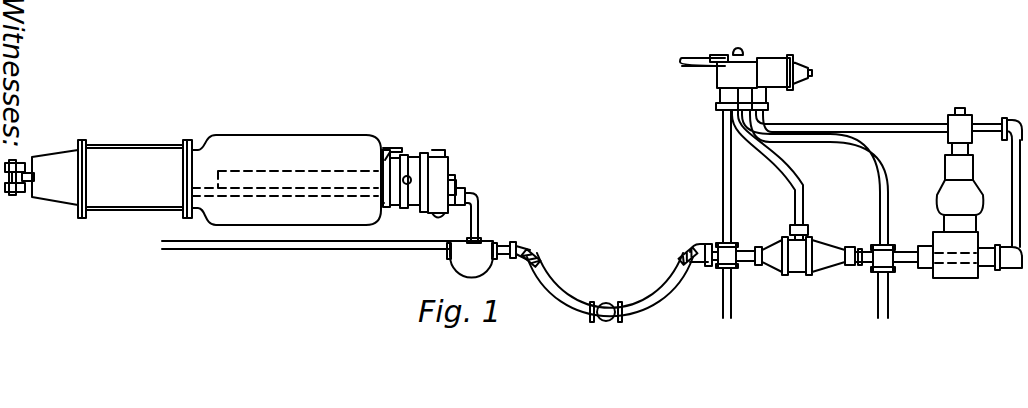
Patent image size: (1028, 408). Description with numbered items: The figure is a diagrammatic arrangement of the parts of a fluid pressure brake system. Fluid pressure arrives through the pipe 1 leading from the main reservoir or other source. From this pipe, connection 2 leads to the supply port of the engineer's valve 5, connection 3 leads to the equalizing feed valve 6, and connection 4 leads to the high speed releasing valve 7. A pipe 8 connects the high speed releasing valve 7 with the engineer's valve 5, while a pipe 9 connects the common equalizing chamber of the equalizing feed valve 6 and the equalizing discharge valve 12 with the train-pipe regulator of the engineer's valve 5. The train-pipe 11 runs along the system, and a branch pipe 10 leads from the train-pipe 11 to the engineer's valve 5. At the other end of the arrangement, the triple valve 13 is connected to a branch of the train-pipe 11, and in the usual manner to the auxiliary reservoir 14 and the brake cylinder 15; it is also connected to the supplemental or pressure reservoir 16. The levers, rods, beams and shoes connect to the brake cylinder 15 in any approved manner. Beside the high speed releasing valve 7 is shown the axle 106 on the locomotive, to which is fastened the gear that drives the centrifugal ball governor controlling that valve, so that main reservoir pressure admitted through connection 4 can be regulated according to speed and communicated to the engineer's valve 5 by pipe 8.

The pipe 1 is at (888, 297).
The connection 2 is at (815, 177).
The connection 3 is at (870, 264).
The connection pipe 4 is at (1010, 157).
The engineer's valve 5 is at (764, 63).
The equalizing feed valve 6 is at (838, 268).
The high speed releasing valve 7 is at (952, 118).
The pipe 8 is at (852, 121).
The pipe 9 is at (794, 168).
The branch pipe 10 is at (738, 176).
The train-pipe 11 is at (322, 249).
The equalizing discharge valve 12 is at (779, 268).
The triple valve 13 is at (418, 168).
The auxiliary reservoir 14 is at (300, 142).
The brake cylinder 15 is at (103, 156).
The supplemental reservoir 16 is at (226, 174).
The axle 106 is at (930, 246).